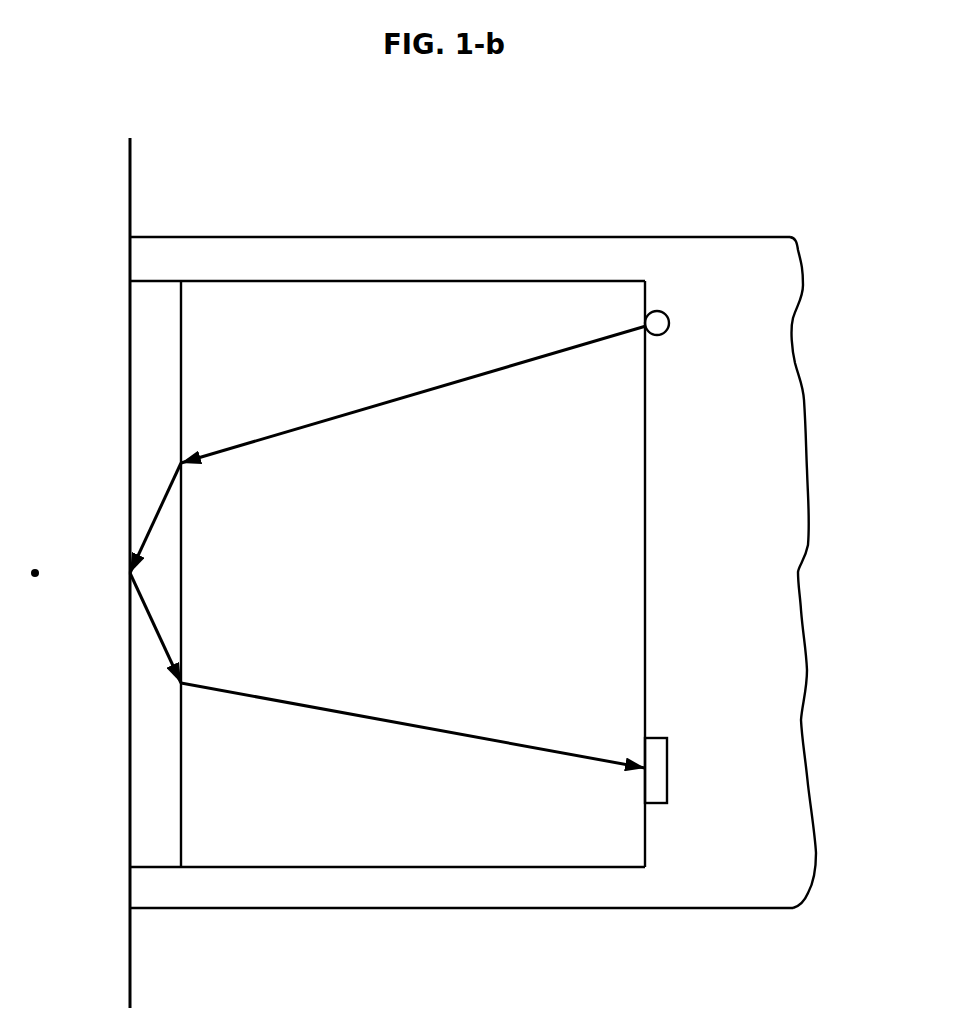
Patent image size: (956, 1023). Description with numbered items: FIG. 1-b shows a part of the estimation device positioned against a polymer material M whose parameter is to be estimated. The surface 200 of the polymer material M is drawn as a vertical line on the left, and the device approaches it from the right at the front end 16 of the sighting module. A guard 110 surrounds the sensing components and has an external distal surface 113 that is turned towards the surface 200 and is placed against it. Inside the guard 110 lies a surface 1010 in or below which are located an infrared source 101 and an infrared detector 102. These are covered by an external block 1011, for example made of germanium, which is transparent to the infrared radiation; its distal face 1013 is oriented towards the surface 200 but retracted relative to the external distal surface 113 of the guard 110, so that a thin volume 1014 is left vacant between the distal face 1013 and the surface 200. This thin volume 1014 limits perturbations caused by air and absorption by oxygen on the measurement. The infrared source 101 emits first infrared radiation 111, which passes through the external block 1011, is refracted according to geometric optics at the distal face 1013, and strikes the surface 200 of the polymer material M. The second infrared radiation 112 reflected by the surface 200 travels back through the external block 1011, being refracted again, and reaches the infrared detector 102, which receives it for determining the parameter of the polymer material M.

The surface of the polymer material 200 is at (129, 213).
The guard 110 is at (253, 262).
The external distal surface of the guard 113 is at (129, 263).
The front end 16 is at (806, 450).
The surface 1010 is at (645, 572).
The distal face of the external block 1013 is at (180, 357).
The thin volume 1014 is at (150, 382).
The external block 1011 is at (430, 582).
The infrared source 101 is at (669, 322).
The infrared detector 102 is at (667, 770).
The first infrared radiation 111 is at (155, 508).
The second infrared radiation 112 is at (157, 640).
The polymer material M is at (35, 558).